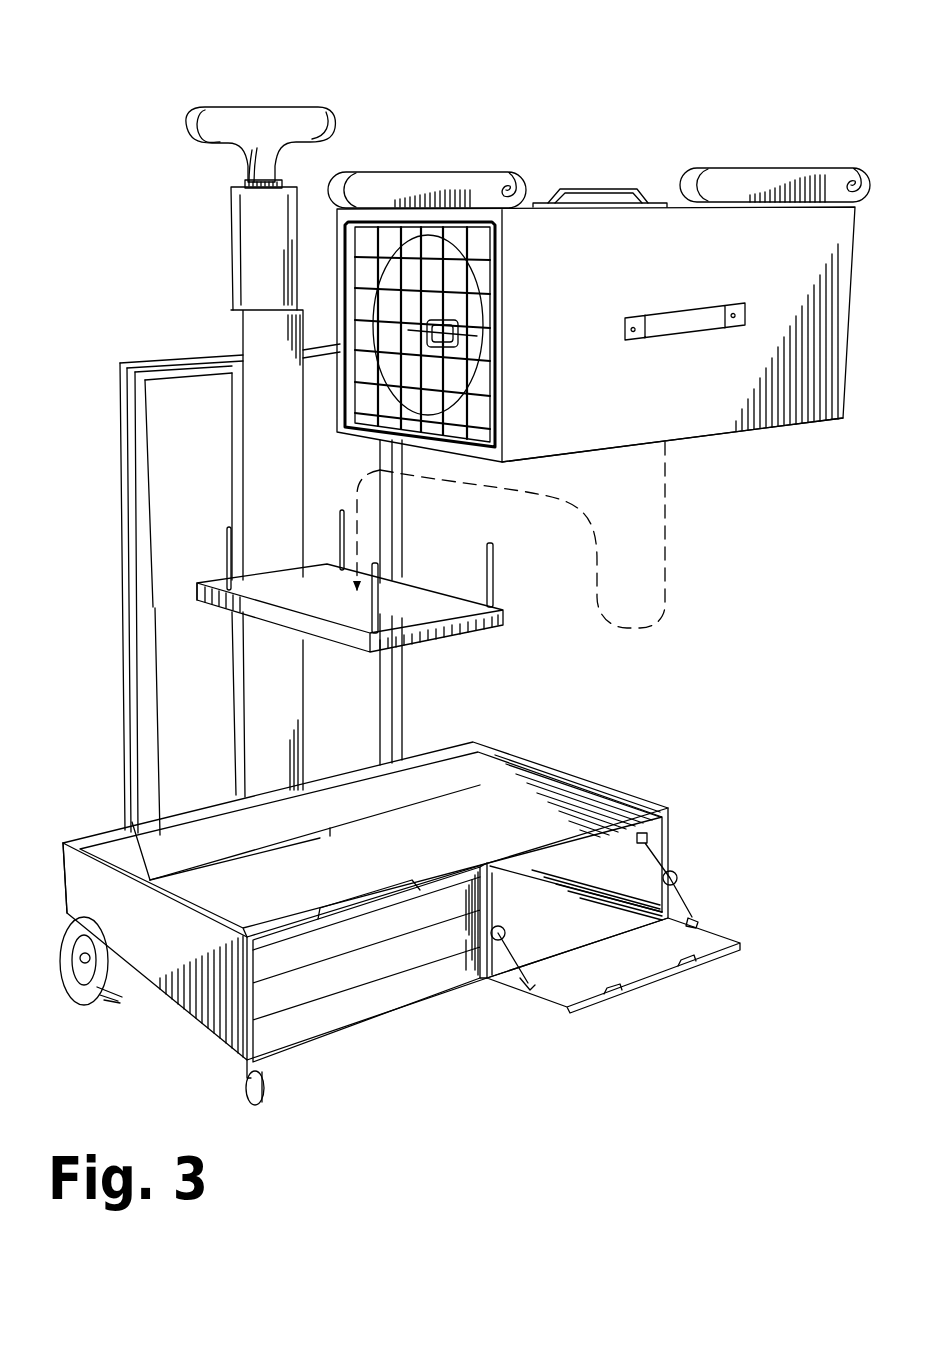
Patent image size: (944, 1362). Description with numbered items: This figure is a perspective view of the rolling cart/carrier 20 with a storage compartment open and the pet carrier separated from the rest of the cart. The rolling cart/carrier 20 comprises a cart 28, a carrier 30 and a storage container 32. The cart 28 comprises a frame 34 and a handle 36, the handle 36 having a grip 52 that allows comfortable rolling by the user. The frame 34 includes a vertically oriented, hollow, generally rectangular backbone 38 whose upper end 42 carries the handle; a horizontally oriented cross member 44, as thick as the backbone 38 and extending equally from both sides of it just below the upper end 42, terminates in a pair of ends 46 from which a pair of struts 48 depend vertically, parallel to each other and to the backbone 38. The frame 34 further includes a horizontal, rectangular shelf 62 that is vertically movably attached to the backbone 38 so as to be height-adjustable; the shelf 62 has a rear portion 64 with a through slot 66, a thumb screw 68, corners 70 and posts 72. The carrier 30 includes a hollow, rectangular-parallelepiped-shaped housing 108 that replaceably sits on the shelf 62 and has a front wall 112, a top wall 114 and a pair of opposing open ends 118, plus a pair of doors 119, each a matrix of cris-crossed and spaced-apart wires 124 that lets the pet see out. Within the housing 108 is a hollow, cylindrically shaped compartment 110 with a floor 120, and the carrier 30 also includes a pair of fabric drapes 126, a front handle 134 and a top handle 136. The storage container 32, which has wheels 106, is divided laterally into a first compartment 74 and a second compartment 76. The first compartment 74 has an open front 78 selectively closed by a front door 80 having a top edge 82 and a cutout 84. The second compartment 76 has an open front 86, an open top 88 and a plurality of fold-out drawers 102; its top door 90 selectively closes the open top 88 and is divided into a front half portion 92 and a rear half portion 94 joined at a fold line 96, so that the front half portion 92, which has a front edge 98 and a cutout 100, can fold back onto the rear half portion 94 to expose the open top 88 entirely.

The rolling cart/carrier 20 is at (70, 170).
The cart 28 is at (262, 104).
The carrier 30 is at (537, 195).
The storage container 32 is at (698, 438).
The frame 34 is at (125, 725).
The handle 36 is at (222, 98).
The backbone 38 is at (232, 362).
The upper end 42 is at (262, 310).
The cross member 44 is at (162, 356).
The pair of ends 46 is at (122, 373).
The pair of struts 48 is at (140, 487).
The grip 52 is at (300, 100).
The shelf 62 is at (420, 640).
The rear portion 64 is at (225, 580).
The through slot 66 is at (288, 580).
The thumb screw 68 is at (197, 590).
The corners 70 is at (500, 620).
The posts 72 is at (494, 572).
The first compartment 74 is at (487, 800).
The second compartment 76 is at (185, 1042).
The open front 78 is at (575, 895).
The front door 80 is at (680, 945).
The top edge 82 is at (730, 945).
The cutout 84 is at (655, 985).
The open front 86 is at (262, 955).
The open top 88 is at (132, 870).
The top door 90 is at (215, 845).
The front half portion 92 is at (375, 858).
The rear half portion 94 is at (345, 812).
The fold line 96 is at (322, 840).
The front edge 98 is at (450, 880).
The cutout 100 is at (337, 940).
The fold-out drawers 102 is at (380, 1000).
The wheels 106 is at (84, 1005).
The housing 108 is at (808, 430).
The compartment 110 is at (375, 268).
The front wall 112 is at (750, 400).
The top wall 114 is at (673, 200).
The pair of opposing open ends 118 is at (415, 372).
The pair of doors 119 is at (450, 305).
The floor 120 is at (440, 365).
The matrix of cris-crossed and spaced-apart wires 124 is at (353, 430).
The pair of fabric drapes 126 is at (422, 170).
The front handle 134 is at (690, 340).
The top handle 136 is at (617, 187).